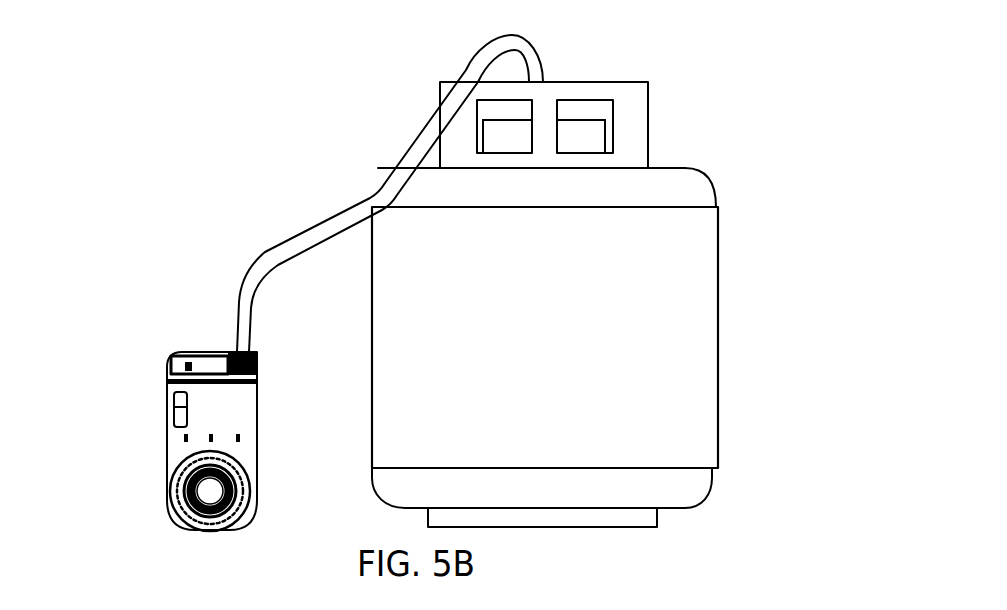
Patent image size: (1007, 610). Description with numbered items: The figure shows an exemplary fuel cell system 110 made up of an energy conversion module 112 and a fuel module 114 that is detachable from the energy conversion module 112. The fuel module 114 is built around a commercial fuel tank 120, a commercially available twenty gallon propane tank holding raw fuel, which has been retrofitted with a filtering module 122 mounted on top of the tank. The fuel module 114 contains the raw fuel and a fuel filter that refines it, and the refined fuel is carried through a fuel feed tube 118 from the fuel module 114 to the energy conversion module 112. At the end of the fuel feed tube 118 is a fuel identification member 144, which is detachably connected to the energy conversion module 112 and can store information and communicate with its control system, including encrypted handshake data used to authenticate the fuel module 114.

The fuel cell system 110 is at (268, 86).
The energy conversion module 112 is at (183, 434).
The fuel module 114 is at (708, 112).
The fuel feed tube 118 is at (383, 196).
The commercial fuel tank 120 is at (412, 482).
The filtering module 122 is at (583, 135).
The fuel identification member 144 is at (238, 352).